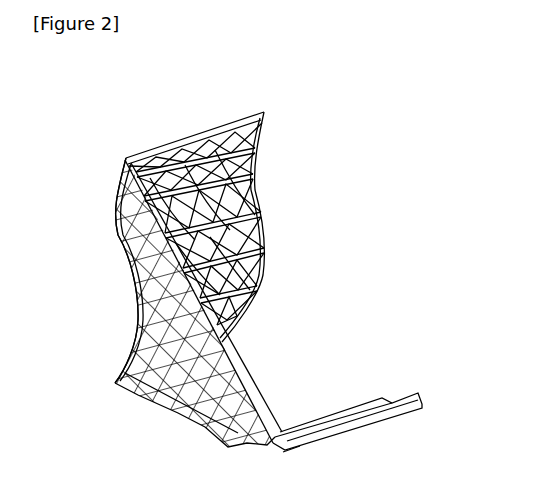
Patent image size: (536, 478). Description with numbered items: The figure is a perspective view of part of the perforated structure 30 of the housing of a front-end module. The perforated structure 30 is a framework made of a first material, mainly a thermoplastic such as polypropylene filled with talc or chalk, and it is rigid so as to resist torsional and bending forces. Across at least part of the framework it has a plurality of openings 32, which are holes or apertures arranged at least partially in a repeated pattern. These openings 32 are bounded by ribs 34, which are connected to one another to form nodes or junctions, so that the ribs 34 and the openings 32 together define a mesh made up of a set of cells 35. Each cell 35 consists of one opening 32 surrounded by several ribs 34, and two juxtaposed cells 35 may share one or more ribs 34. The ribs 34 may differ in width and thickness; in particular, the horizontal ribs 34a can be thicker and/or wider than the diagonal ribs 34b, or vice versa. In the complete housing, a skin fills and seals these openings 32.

The perforated structure 30 is at (260, 186).
The openings 32 is at (253, 243).
The ribs 34 is at (220, 258).
The horizontal ribs 34a is at (176, 150).
The diagonal ribs 34b is at (130, 263).
The cells 35 is at (250, 261).